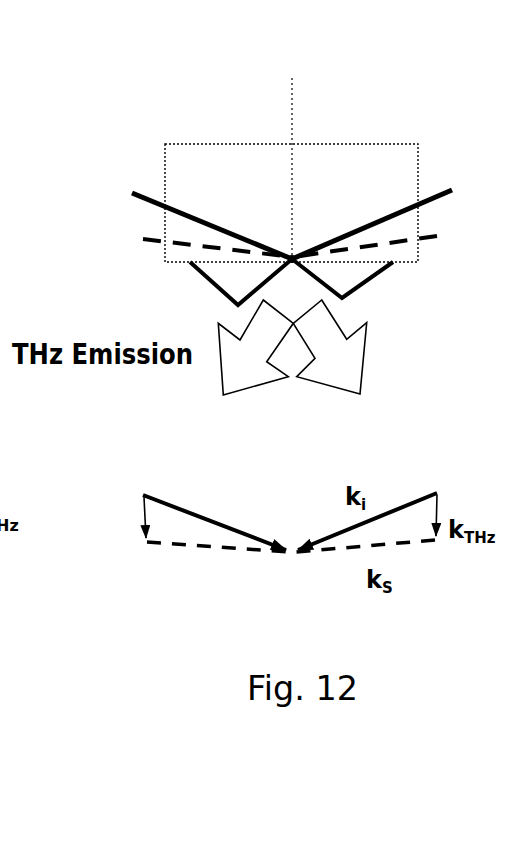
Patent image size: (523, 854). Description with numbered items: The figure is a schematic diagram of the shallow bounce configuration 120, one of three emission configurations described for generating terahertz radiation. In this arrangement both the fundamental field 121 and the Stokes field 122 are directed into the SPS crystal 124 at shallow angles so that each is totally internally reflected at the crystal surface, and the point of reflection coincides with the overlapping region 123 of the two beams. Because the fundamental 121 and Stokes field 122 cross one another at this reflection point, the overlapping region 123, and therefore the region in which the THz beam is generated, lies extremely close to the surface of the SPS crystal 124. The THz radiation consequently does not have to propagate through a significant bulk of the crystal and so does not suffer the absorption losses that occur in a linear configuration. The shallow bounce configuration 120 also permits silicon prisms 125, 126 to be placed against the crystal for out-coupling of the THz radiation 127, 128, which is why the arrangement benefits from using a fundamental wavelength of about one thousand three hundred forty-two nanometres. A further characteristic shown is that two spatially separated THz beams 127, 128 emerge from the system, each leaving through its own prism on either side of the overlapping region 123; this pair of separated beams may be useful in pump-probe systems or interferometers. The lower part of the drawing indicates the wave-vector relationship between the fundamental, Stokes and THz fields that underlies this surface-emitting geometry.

The shallow bounce configuration 120 is at (374, 77).
The fundamental field 121 is at (145, 187).
The Stokes field 122 is at (146, 228).
The overlapping region 123 is at (280, 238).
The SPS crystal 124 is at (387, 141).
The silicon prism 125 is at (368, 282).
The silicon prism 126 is at (200, 283).
The THz radiation 127 is at (368, 362).
The THz radiation 128 is at (220, 369).